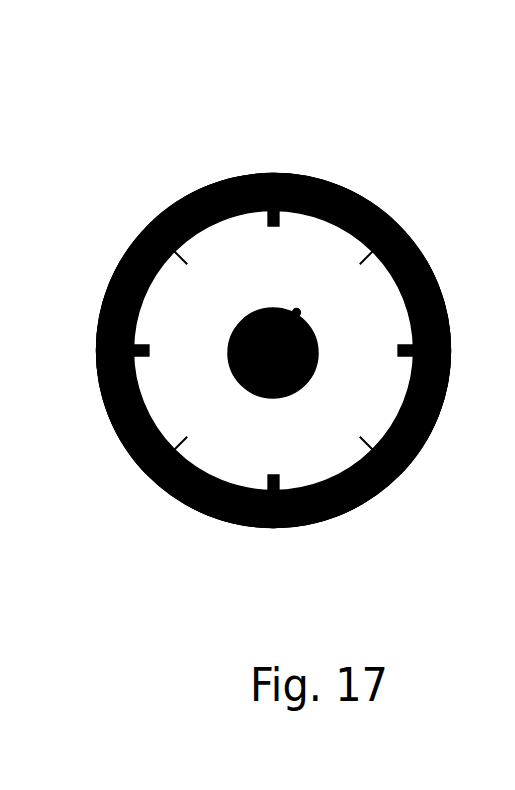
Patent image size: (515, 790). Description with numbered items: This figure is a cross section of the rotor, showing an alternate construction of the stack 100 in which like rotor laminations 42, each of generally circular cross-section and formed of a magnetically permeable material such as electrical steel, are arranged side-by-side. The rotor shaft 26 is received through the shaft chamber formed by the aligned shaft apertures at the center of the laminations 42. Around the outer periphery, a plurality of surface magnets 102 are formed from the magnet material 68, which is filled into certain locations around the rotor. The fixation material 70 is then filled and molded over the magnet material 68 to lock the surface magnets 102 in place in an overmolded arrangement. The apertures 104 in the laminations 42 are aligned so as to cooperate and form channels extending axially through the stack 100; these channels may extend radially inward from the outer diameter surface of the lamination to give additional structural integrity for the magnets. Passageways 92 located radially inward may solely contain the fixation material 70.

The stack 100 is at (278, 330).
The surface magnets 102 is at (250, 173).
The apertures 104 is at (188, 270).
The passageways 92 is at (336, 287).
The rotor shaft 26 is at (317, 340).
The rotor lamination 42 is at (300, 440).
The magnet material 68 is at (122, 432).
The fixation material 70 is at (152, 467).